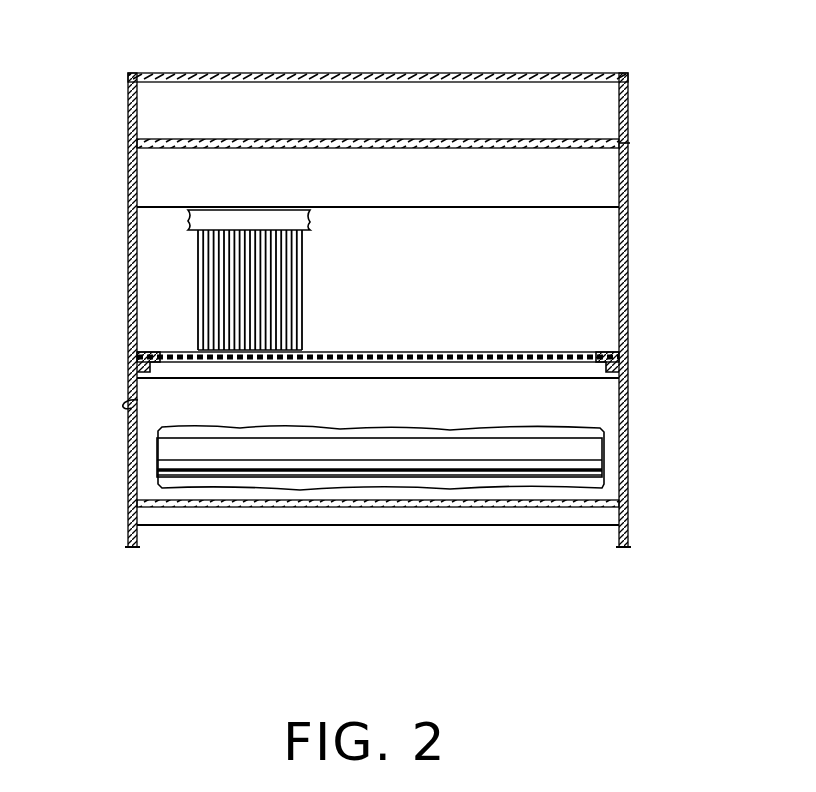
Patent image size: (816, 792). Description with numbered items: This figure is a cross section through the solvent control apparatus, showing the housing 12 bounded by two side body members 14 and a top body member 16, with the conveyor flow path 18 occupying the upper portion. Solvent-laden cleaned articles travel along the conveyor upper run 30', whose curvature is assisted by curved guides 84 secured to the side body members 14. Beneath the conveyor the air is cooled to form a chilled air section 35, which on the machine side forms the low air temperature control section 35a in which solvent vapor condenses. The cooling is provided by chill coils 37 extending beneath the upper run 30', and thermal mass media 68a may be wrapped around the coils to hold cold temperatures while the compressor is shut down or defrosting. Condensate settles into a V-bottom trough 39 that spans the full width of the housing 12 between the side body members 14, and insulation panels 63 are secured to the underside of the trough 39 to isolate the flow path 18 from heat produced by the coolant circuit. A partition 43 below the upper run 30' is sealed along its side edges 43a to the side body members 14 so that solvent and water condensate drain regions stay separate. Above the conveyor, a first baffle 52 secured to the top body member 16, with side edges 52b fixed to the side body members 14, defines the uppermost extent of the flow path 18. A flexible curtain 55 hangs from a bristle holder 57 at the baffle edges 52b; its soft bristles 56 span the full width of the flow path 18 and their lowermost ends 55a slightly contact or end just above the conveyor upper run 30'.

The housing 12 is at (693, 146).
The side body members 14 is at (128, 288).
The top body member 16 is at (398, 74).
The conveyor flow path 18 is at (495, 262).
The conveyor upper run 30' is at (378, 326).
The chilled air section 35 is at (160, 237).
The low air temperature control section 35a is at (600, 284).
The chill coils 37 is at (272, 455).
The V-bottom trough 39 is at (590, 500).
The partition 43 is at (612, 410).
The side edges 43a is at (137, 408).
The first baffle 52 is at (480, 160).
The side edges 52b is at (622, 166).
The flexible curtain 55 is at (305, 257).
The lowermost ends 55a is at (298, 352).
The soft bristles 56 is at (285, 298).
The bristle holder 57 is at (240, 218).
The insulation panels 63 is at (485, 520).
The thermal mass media 68a is at (440, 430).
The curved guides 84 is at (137, 373).